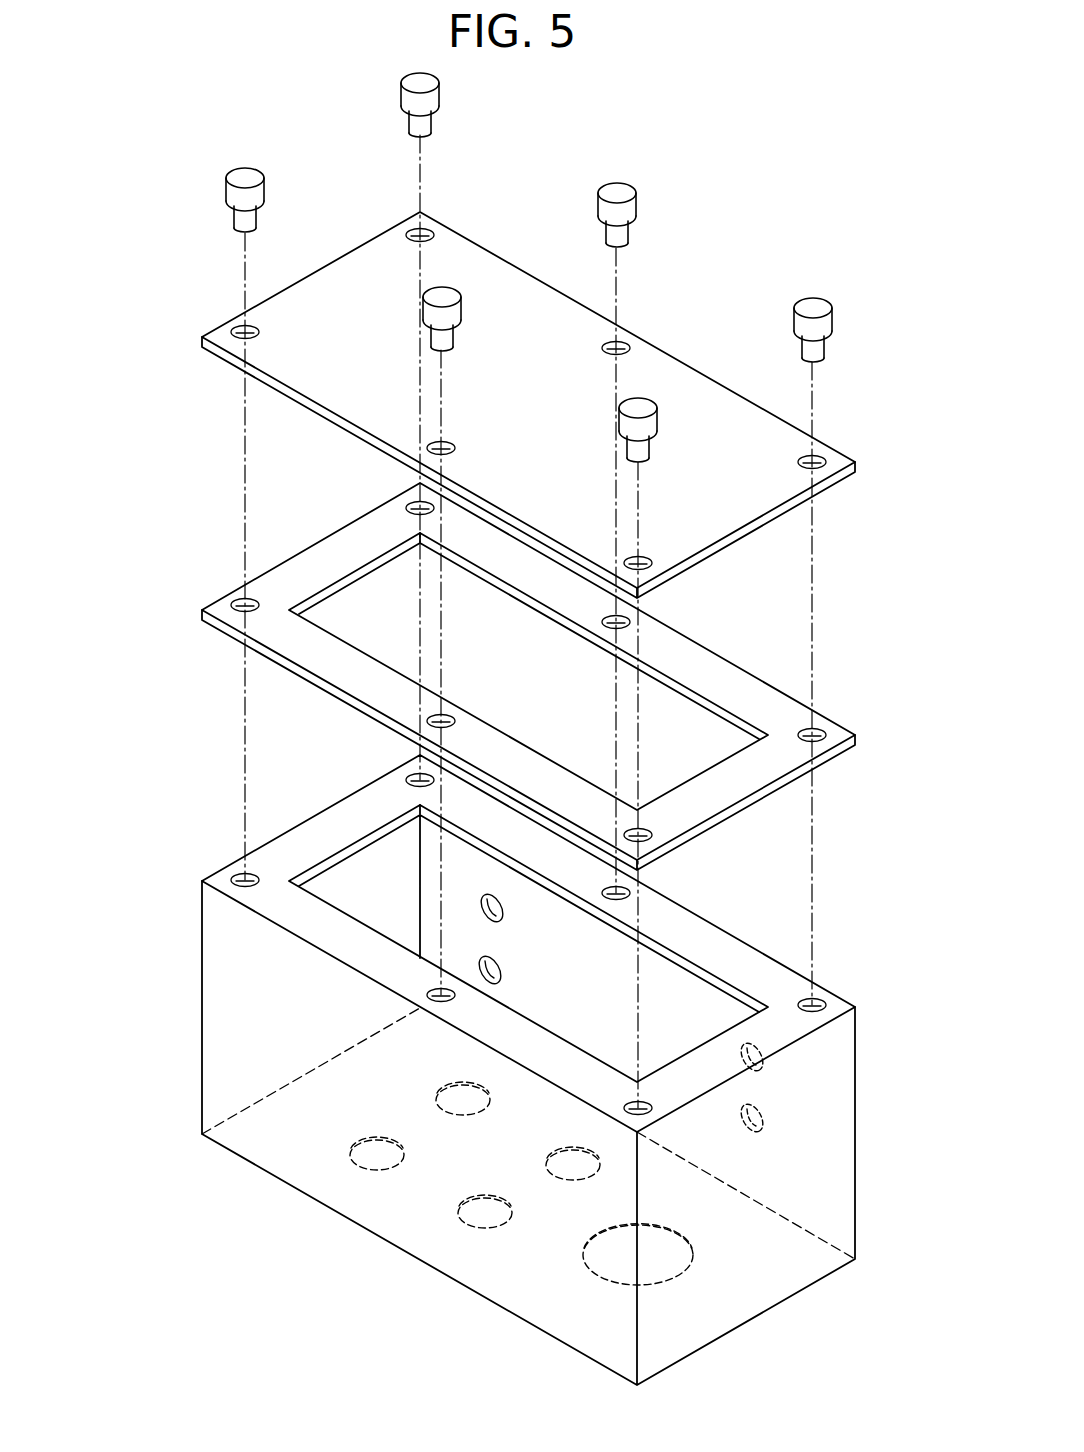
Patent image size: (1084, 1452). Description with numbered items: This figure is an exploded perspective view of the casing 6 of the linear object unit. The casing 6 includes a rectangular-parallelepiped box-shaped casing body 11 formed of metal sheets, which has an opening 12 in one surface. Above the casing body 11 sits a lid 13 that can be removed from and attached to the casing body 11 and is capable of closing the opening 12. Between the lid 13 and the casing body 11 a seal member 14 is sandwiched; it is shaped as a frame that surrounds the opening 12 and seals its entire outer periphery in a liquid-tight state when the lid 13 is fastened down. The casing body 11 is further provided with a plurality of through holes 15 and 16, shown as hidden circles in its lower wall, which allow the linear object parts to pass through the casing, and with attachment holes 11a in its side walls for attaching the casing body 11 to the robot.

The casing 6 is at (130, 336).
The casing body 11 is at (842, 1204).
The attachment holes 11a is at (501, 908).
The opening 12 is at (707, 972).
The lid 13 is at (703, 398).
The seal member 14 is at (753, 678).
The through hole 15 is at (603, 1224).
The through holes 16 is at (461, 1086).